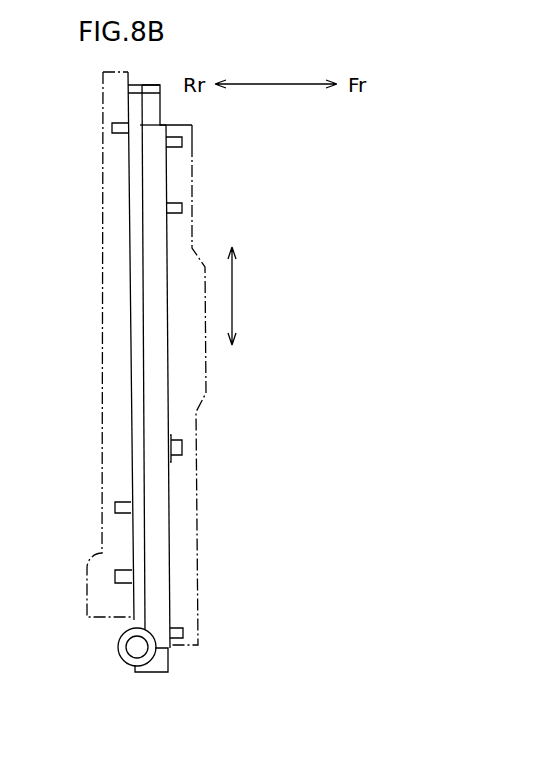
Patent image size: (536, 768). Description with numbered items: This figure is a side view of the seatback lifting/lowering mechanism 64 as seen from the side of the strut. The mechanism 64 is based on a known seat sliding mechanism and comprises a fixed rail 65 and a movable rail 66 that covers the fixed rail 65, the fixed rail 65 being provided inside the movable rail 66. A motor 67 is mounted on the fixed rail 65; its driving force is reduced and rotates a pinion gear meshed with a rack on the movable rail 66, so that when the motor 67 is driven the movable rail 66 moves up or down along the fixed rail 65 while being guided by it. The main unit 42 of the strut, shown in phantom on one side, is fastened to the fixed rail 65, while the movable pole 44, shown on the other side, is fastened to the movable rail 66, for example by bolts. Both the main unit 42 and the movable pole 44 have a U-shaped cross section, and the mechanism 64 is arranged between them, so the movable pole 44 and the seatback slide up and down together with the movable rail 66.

The main unit 42 is at (113, 309).
The movable pole 44 is at (198, 373).
The seatback lifting/lowering mechanism 64 is at (180, 236).
The fixed rail 65 is at (133, 232).
The movable rail 66 is at (160, 503).
The motor 67 is at (119, 640).